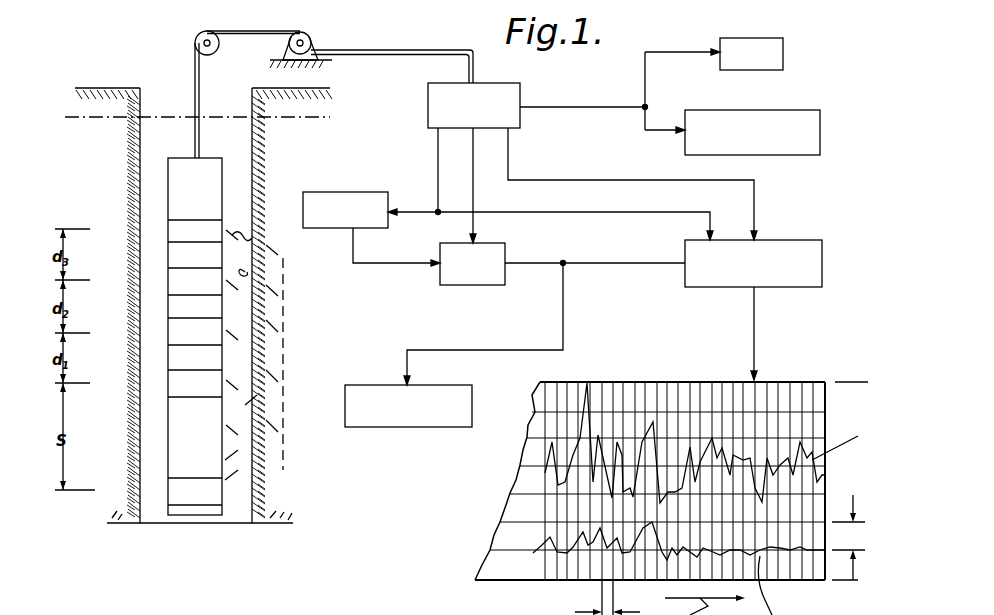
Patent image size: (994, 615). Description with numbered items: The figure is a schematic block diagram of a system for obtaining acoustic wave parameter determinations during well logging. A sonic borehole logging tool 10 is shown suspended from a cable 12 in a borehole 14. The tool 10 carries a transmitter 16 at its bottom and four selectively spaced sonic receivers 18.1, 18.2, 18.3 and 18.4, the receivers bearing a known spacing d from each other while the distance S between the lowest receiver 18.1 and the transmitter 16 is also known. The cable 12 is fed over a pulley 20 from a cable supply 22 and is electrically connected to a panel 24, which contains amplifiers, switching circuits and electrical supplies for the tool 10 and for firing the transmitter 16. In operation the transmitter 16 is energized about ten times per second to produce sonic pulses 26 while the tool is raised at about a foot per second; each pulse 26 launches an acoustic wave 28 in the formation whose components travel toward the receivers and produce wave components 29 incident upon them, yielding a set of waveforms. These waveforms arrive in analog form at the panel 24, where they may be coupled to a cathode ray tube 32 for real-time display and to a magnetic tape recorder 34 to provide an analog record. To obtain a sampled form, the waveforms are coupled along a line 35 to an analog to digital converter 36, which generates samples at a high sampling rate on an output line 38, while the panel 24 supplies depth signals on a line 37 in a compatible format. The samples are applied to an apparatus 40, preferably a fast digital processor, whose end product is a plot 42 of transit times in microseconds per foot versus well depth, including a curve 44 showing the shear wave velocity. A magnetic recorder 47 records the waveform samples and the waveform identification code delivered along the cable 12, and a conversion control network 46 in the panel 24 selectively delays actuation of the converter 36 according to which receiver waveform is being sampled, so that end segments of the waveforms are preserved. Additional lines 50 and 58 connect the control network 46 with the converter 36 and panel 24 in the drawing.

The sonic borehole logging tool 10 is at (222, 440).
The cable 12 is at (245, 32).
The borehole 14 is at (250, 277).
The transmitter 16 is at (172, 489).
The sonic receiver 18.1 is at (168, 383).
The sonic receiver 18.2 is at (168, 328).
The sonic receiver 18.3 is at (168, 280).
The sonic receiver 18.4 is at (168, 225).
The pulley 20 is at (198, 38).
The cable supply 22 is at (313, 42).
The panel 24 is at (428, 107).
The sonic pulse 26 is at (230, 493).
The acoustic wave 28 is at (286, 338).
The wave components 29 is at (244, 236).
The cathode ray tube 32 is at (783, 57).
The magnetic tape recorder 34 is at (820, 130).
The line 35 is at (473, 155).
The analog to digital converter 36 is at (470, 285).
The line 37 is at (590, 180).
The output line 38 is at (545, 263).
The apparatus 40 is at (822, 255).
The plot 42 is at (677, 360).
The curve 44 is at (825, 480).
The conversion control network 46 is at (335, 192).
The magnetic recorder 47 is at (430, 427).
The control line 50 is at (438, 158).
The convert command line 58 is at (390, 265).